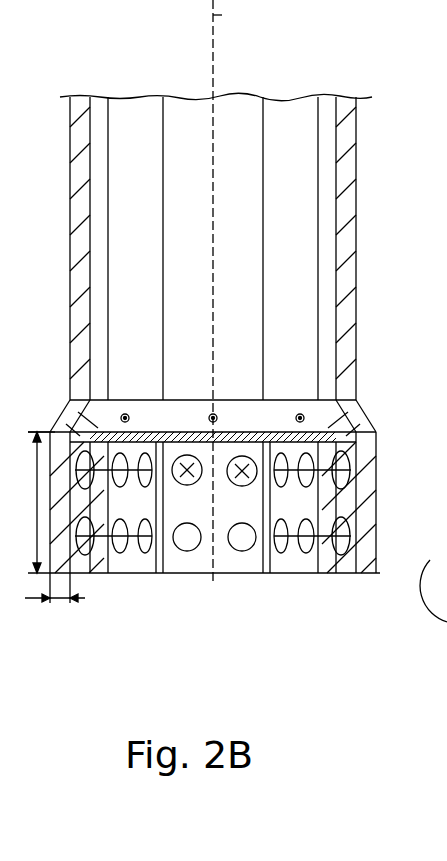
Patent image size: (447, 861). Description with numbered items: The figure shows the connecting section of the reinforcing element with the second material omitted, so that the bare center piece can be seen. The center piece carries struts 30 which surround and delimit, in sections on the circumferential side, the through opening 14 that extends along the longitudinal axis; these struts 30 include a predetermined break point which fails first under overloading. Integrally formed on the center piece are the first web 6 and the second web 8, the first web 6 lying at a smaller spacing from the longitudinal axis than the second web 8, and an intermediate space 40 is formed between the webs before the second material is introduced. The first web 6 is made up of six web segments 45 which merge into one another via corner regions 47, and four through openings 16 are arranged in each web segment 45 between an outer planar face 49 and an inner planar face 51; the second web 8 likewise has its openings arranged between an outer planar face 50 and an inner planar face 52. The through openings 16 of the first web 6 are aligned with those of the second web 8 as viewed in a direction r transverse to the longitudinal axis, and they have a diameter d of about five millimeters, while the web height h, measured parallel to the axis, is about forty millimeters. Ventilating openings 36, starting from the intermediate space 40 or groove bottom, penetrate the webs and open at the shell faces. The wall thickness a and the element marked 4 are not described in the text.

The struts 30 is at (350, 97).
The ventilating openings 36 is at (207, 400).
The through opening 14 is at (253, 279).
The through openings of the first web 16 is at (237, 458).
The second web 8 is at (391, 500).
The intermediate space 40 is at (88, 573).
The first web 6 is at (106, 573).
The corner regions 47 is at (158, 573).
The web segments 45 is at (241, 575).
The inner planar face 51 is at (310, 565).
The outer planar face 49 is at (340, 545).
The inner planar face 52 is at (353, 560).
The outer planar face 50 is at (388, 520).
The diameter of the through openings d is at (292, 458).
The transverse direction r is at (205, 570).
The web height h is at (36, 502).
The wall thickness a is at (55, 610).
The device 4 is at (8, 477).